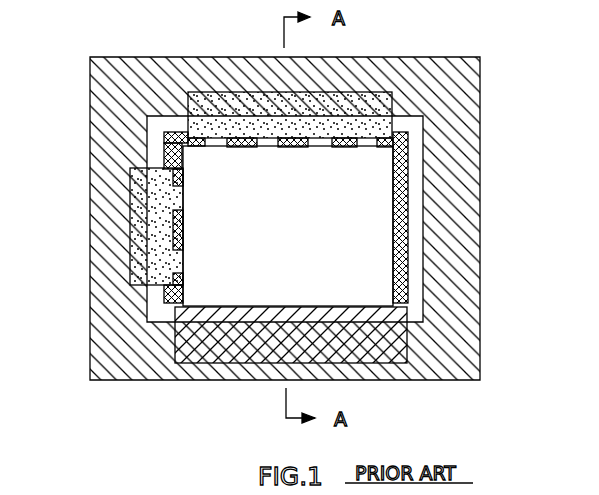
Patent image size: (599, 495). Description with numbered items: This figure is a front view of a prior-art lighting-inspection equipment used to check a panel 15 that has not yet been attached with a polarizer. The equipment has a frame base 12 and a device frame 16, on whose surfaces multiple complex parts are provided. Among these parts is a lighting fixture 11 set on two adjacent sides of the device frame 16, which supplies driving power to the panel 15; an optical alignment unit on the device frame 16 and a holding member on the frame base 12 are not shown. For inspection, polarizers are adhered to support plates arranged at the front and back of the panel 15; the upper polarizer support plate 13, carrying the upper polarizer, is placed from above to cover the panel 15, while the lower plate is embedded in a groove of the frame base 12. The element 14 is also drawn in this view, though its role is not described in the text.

The lighting fixture 11 is at (365, 105).
The frame base 12 is at (408, 165).
The upper polarizer support plate 13 is at (360, 223).
The bottom block 14 is at (368, 343).
The panel 15 is at (185, 145).
The device frame 16 is at (123, 355).